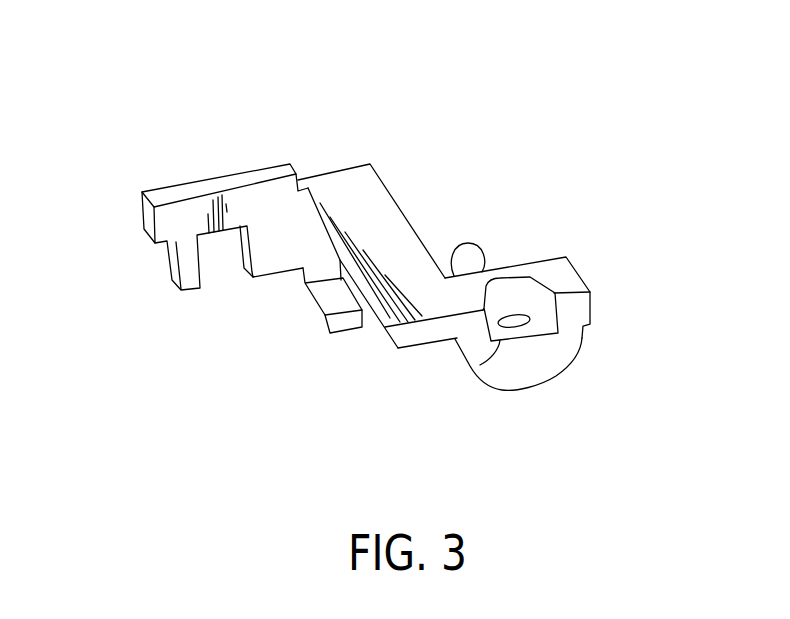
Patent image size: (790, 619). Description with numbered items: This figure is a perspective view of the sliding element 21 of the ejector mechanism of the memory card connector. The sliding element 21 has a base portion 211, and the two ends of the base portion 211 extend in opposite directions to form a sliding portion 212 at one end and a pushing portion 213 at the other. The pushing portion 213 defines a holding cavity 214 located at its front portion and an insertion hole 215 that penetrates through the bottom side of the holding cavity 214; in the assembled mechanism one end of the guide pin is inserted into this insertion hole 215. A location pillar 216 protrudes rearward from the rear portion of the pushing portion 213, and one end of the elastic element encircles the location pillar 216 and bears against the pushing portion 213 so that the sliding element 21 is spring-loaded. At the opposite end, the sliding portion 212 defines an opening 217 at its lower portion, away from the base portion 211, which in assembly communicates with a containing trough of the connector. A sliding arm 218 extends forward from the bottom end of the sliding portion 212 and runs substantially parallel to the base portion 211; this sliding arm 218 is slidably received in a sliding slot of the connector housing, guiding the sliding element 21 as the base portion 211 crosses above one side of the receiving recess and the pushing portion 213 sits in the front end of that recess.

The sliding element 21 is at (116, 142).
The base portion 211 is at (396, 238).
The sliding portion 212 is at (235, 188).
The pushing portion 213 is at (558, 276).
The holding cavity 214 is at (480, 363).
The insertion hole 215 is at (519, 327).
The location pillar 216 is at (478, 257).
The opening 217 is at (230, 257).
The sliding arm 218 is at (338, 309).